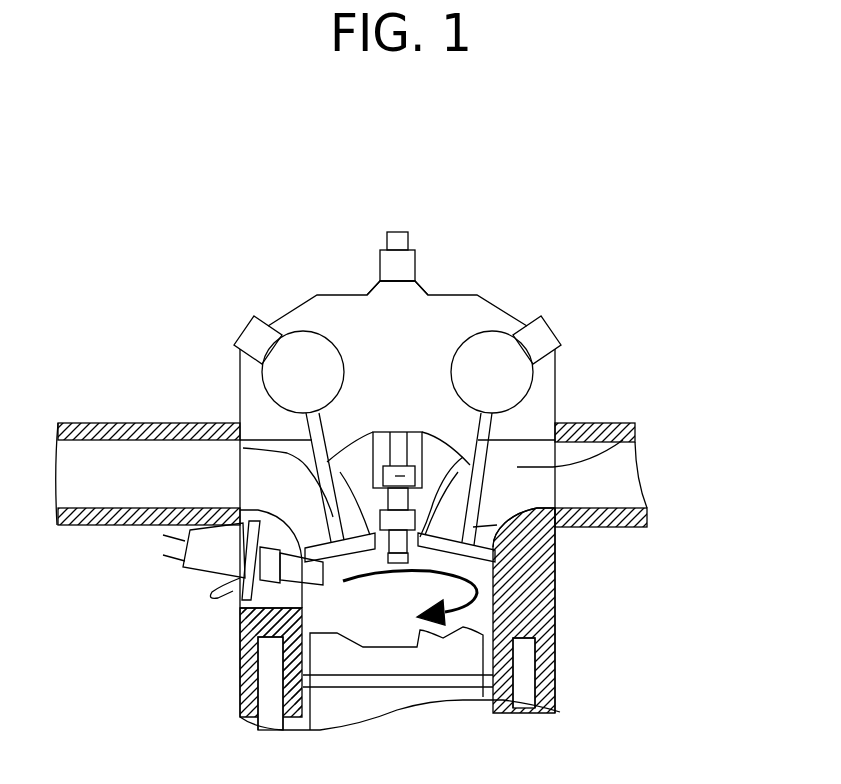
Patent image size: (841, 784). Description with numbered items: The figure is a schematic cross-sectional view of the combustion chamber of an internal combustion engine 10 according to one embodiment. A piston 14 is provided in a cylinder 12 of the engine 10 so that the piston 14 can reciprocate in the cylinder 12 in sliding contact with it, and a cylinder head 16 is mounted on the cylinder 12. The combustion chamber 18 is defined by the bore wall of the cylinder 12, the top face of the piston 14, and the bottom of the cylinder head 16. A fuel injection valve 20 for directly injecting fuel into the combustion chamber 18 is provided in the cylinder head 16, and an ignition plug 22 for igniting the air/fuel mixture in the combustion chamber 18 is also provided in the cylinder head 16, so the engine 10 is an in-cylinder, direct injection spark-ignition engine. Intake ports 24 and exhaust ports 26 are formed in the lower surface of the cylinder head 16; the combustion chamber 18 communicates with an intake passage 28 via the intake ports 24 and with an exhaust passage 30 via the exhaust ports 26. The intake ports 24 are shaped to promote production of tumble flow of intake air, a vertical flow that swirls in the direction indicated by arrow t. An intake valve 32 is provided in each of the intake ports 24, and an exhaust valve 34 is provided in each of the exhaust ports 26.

The internal combustion engine 10 is at (615, 583).
The cylinder 12 is at (240, 695).
The piston 14 is at (457, 662).
The cylinder head 16 is at (430, 343).
The combustion chamber 18 is at (313, 617).
The fuel injection valve 20 is at (193, 574).
The ignition plug 22 is at (422, 470).
The intake port 24 is at (258, 450).
The exhaust port 26 is at (633, 428).
The intake passage 28 is at (73, 422).
The exhaust passage 30 is at (607, 422).
The intake valve 32 is at (238, 453).
The exhaust valve 34 is at (650, 508).
The arrow t is at (493, 593).